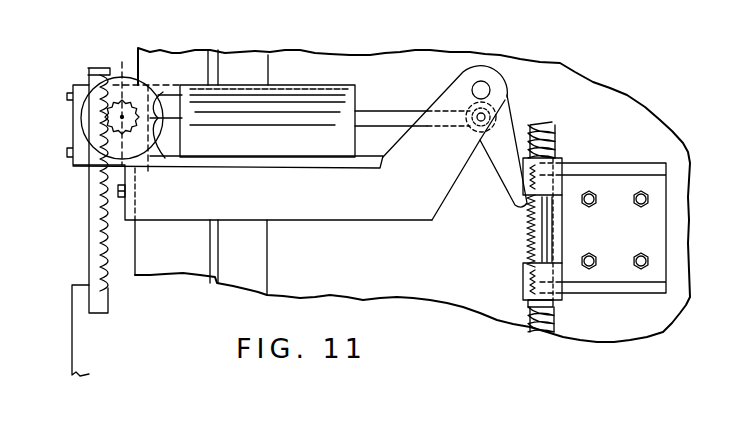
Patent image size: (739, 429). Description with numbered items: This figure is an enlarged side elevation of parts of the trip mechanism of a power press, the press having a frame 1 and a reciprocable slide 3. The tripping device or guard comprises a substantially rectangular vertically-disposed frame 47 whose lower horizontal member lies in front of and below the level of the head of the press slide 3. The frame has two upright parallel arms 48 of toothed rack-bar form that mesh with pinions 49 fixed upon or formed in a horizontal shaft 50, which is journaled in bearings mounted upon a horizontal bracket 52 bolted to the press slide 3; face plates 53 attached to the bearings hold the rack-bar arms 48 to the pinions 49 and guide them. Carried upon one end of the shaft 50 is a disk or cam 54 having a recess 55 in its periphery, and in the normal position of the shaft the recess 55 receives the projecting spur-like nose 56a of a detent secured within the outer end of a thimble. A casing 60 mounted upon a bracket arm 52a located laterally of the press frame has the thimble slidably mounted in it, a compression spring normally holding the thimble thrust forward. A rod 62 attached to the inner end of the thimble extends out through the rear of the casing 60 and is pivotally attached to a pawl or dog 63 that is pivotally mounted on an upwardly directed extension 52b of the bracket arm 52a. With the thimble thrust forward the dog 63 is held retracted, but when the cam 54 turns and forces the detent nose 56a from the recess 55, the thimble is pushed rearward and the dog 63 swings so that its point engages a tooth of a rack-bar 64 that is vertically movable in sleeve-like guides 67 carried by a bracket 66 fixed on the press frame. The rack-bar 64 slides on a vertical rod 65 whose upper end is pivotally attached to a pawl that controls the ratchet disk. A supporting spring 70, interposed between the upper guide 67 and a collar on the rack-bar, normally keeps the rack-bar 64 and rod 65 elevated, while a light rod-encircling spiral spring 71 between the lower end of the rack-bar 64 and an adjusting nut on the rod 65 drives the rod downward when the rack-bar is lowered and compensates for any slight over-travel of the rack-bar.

The frame 1 is at (393, 290).
The reciprocable slide 3 is at (155, 270).
The frame 47 is at (74, 355).
The upright parallel arms 48 is at (89, 232).
The pinions 49 is at (142, 109).
The horizontal shaft 50 is at (115, 118).
The horizontal bracket 52 is at (125, 183).
The bracket arm 52a is at (322, 207).
The upwardly directed extension 52b is at (500, 90).
The face plates 53 is at (75, 137).
The disk or cam 54 is at (95, 99).
The recess 55 is at (162, 147).
The spur-like nose 56a is at (163, 119).
The casing 60 is at (295, 100).
The rod 62 is at (388, 105).
The pawl or dog 63 is at (503, 173).
The rack-bar 64 is at (537, 233).
The vertical rod 65 is at (547, 327).
The bracket 66 is at (610, 283).
The sleeve-like guides 67 is at (542, 167).
The supporting spring 70 is at (548, 130).
The spiral spring 71 is at (532, 333).